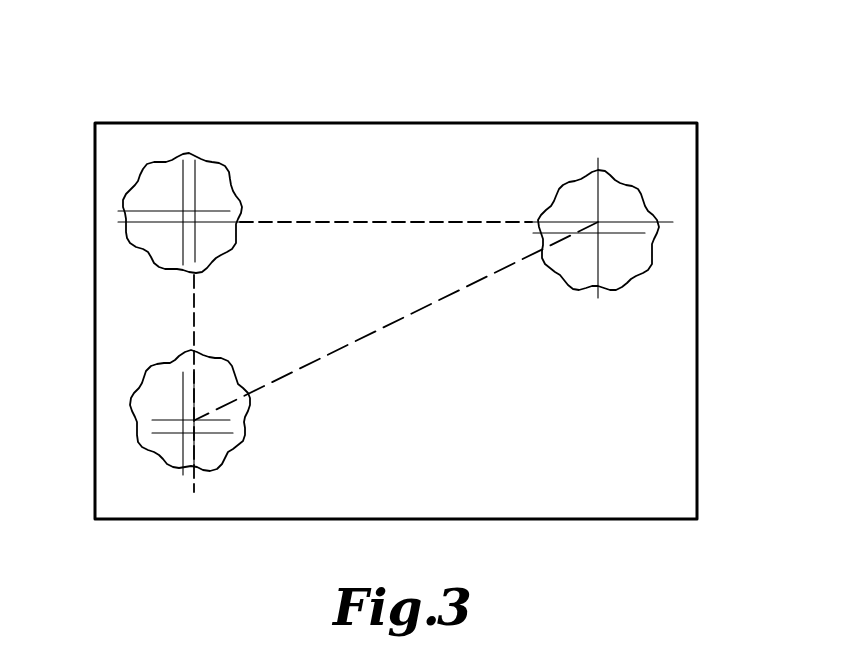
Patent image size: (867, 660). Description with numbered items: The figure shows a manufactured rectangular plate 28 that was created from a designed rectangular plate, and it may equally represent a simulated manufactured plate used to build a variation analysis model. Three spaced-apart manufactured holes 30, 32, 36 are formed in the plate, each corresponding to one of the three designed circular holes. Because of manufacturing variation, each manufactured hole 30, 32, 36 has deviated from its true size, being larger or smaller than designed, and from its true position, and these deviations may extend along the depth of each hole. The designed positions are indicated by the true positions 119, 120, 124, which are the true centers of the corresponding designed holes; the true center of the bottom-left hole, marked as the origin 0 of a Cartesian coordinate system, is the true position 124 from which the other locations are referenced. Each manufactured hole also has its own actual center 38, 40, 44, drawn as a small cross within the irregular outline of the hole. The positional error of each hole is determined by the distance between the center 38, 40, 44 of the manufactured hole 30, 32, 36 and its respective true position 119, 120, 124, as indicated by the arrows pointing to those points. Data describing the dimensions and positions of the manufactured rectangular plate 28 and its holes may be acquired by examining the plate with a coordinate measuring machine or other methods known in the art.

The manufactured rectangular plate 28 is at (422, 135).
The manufactured hole 30 is at (162, 163).
The manufactured hole 32 is at (625, 188).
The manufactured hole 36 is at (147, 383).
The center 38 is at (182, 210).
The center 40 is at (600, 236).
The center 44 is at (182, 419).
The true position 119 is at (196, 221).
The true position 120 is at (597, 221).
The true position 124 is at (195, 419).
The origin point 0 is at (195, 434).